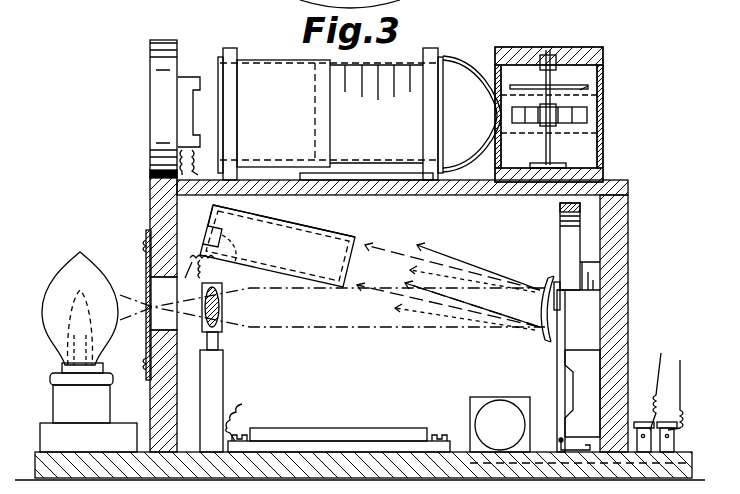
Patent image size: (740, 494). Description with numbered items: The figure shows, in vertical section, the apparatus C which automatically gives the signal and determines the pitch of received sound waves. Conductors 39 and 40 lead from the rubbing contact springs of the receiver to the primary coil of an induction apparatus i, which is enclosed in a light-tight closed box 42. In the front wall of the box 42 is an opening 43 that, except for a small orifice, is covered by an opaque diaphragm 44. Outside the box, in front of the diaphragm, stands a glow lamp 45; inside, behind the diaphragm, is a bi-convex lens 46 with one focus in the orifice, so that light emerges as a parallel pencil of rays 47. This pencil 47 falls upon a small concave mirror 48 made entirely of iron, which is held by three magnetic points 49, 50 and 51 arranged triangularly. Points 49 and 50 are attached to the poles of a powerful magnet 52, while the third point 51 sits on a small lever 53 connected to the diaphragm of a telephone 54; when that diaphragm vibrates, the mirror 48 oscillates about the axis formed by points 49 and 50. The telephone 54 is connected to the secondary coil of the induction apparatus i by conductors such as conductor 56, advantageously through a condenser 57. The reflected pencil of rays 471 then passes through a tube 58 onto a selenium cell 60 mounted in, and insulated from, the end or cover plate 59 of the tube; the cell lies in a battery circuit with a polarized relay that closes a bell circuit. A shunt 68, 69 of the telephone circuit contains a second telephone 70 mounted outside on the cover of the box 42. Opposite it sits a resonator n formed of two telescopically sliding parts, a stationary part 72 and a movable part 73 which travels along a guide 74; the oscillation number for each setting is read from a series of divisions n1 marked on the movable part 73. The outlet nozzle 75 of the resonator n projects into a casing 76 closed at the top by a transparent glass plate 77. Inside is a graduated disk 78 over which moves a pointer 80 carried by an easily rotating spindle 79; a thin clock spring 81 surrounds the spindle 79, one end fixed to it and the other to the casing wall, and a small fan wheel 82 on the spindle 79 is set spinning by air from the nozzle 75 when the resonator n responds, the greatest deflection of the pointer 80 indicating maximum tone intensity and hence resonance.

The conductor 39 is at (652, 390).
The conductor 40 is at (682, 380).
The light-tight closed box 42 is at (620, 258).
The opening 43 is at (163, 306).
The opaque diaphragm 44 is at (148, 287).
The glow lamp 45 is at (60, 282).
The bi-convex lens 46 is at (216, 306).
The parallel pencil of rays 47 is at (422, 317).
The reflected pencil of rays 471 is at (450, 255).
The concave mirror 48 is at (545, 335).
The magnetic point 49 is at (630, 299).
The magnetic point 50 is at (600, 300).
The magnetic point 51 is at (575, 371).
The magnet 52 is at (565, 230).
The lever 53 is at (565, 350).
The telephone 54 is at (562, 392).
The conductor 56 is at (242, 404).
The condenser 57 is at (353, 437).
The tube 58 is at (277, 246).
The end or cover plate 59 is at (218, 204).
The selenium cell 60 is at (219, 274).
The shunt conductor 68 is at (178, 157).
The shunt conductor 69 is at (150, 177).
The second telephone 70 is at (187, 88).
The stationary resonator part 72 is at (330, 113).
The movable resonator part 73 is at (376, 114).
The guide 74 is at (340, 182).
The outlet nozzle 75 is at (466, 100).
The casing 76 is at (603, 82).
The transparent glass plate 77 is at (575, 62).
The graduated disk 78 is at (590, 92).
The spindle 79 is at (552, 150).
The pointer 80 is at (575, 83).
The clock spring 81 is at (582, 133).
The fan wheel 82 is at (587, 113).
The apparatus C is at (138, 109).
The resonator n is at (242, 104).
The series of divisions n1 is at (400, 65).
The induction apparatus i is at (500, 424).